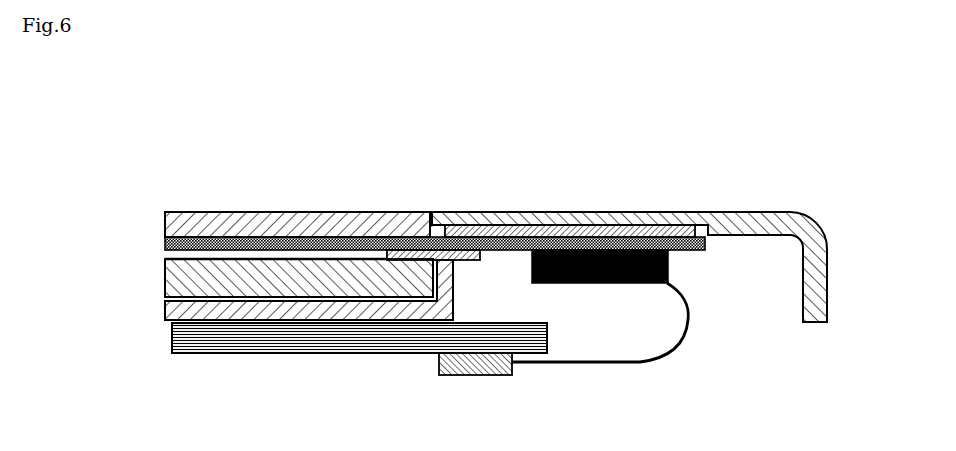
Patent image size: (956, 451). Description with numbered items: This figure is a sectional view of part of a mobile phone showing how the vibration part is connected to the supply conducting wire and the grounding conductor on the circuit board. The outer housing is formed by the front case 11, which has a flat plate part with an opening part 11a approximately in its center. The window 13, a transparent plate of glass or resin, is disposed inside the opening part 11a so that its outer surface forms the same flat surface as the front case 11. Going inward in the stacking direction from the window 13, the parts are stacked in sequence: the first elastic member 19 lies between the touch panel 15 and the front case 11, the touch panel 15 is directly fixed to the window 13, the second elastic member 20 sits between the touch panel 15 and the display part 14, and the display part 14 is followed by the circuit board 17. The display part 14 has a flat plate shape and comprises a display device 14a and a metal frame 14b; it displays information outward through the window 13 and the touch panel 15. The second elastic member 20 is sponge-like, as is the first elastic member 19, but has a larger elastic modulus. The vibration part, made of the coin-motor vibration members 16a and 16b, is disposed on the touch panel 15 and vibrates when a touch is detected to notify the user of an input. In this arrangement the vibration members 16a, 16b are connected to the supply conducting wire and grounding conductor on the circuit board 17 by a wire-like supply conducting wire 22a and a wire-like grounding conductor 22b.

The front case 11 is at (503, 217).
The opening part 11a is at (431, 212).
The window 13 is at (265, 218).
The display part 14 is at (258, 290).
The display device 14a is at (165, 281).
The metal frame 14b is at (165, 310).
The touch panel 15 is at (165, 244).
The vibration member 16a is at (671, 267).
The vibration member 16b is at (652, 266).
The circuit board 17 is at (320, 345).
The first elastic member 19 is at (606, 226).
The second elastic member 20 is at (411, 252).
The supply conducting wire 22a is at (618, 365).
The grounding conductor 22b is at (600, 347).